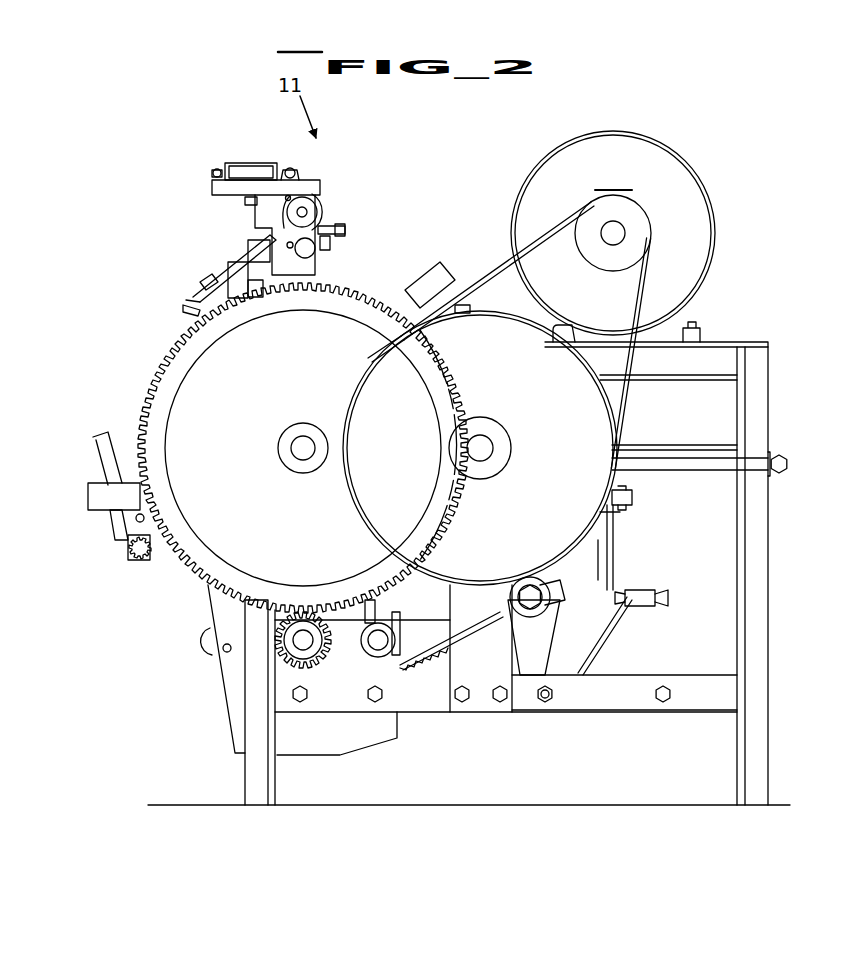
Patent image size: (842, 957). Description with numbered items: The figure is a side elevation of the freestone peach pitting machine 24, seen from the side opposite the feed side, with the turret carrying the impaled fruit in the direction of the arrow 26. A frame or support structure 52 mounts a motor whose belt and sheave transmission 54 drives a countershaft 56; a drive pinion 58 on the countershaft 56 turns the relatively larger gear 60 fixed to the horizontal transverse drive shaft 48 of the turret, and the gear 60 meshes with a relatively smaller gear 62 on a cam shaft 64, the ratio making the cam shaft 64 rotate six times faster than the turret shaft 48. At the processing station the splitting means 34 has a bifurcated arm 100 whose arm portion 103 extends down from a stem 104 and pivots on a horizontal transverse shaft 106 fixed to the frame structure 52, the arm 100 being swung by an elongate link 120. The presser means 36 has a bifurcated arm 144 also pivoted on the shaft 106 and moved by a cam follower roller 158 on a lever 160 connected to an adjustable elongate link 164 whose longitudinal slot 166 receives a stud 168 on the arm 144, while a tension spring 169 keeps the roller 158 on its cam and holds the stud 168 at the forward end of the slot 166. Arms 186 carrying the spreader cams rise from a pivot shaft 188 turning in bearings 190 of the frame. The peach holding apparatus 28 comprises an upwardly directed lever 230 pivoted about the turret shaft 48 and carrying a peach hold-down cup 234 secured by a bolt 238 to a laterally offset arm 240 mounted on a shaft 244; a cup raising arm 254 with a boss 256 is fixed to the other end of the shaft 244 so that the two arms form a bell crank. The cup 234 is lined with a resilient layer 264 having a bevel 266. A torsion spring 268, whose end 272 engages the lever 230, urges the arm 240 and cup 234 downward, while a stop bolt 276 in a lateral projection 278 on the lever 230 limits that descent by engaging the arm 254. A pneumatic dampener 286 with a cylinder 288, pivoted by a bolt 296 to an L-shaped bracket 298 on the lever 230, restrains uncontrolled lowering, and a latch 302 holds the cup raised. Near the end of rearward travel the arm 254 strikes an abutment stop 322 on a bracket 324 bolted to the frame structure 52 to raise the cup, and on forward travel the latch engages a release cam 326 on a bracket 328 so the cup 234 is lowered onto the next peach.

The freestone peach pitting machine 24 is at (428, 215).
The arrow 26 is at (140, 345).
The peach holding apparatus 28 is at (190, 290).
The splitting means 34 is at (634, 500).
The fruit presser means 36 is at (570, 650).
The drive shaft 48 is at (296, 450).
The frame or support structure 52 is at (722, 338).
The belt and sheave transmission 54 is at (503, 262).
The countershaft 56 is at (490, 452).
The drive pinion 58 is at (495, 438).
The gear 60 is at (145, 418).
The gear 62 is at (312, 668).
The cam shaft 64 is at (303, 630).
The arm 100 is at (613, 532).
The arm portion 103 is at (600, 550).
The stem 104 is at (613, 516).
The shaft 106 is at (553, 694).
The link 120 is at (657, 594).
The presser arm 144 is at (582, 663).
The cam follower roller 158 is at (208, 641).
The lever 160 is at (228, 667).
The link 164 is at (440, 643).
The longitudinal slot 166 is at (548, 592).
The stud 168 is at (525, 582).
The tension spring 169 is at (449, 667).
The arms 186 is at (367, 600).
The pivot shaft 188 is at (368, 652).
The bearings 190 is at (408, 600).
The lever 230 is at (305, 265).
The peach hold-down cup 234 is at (186, 300).
The bolt 238 is at (205, 280).
The offset arm 240 is at (224, 280).
The shaft 244 is at (303, 212).
The cup raising arm 254 is at (313, 252).
The boss 256 is at (312, 204).
The layer of resilient material 264 is at (200, 307).
The bevel 266 is at (182, 313).
The torsion spring 268 is at (323, 214).
The spring end 272 is at (298, 194).
The stop bolt 276 is at (347, 230).
The lateral projection 278 is at (332, 243).
The pneumatic dampener 286 is at (245, 163).
The cylinder 288 is at (271, 168).
The bolt 296 is at (213, 172).
The L-shaped bracket 298 is at (212, 188).
The latch 302 is at (252, 205).
The abutment stop 322 is at (417, 278).
The bracket 324 is at (462, 313).
The release cam 326 is at (245, 285).
The bracket 328 is at (258, 272).